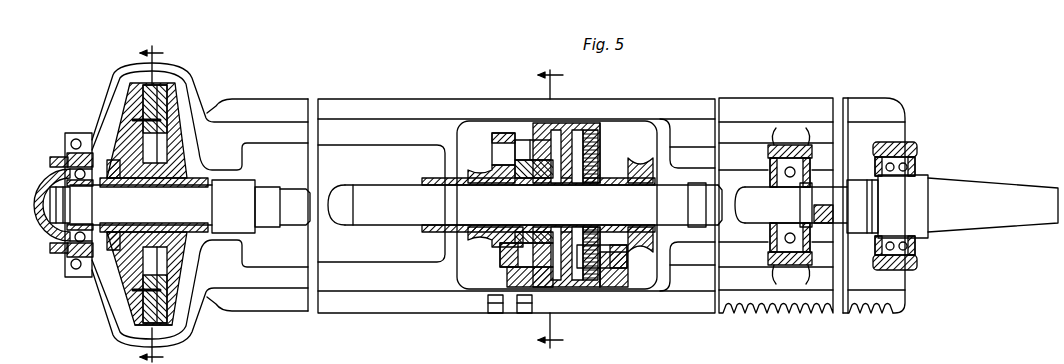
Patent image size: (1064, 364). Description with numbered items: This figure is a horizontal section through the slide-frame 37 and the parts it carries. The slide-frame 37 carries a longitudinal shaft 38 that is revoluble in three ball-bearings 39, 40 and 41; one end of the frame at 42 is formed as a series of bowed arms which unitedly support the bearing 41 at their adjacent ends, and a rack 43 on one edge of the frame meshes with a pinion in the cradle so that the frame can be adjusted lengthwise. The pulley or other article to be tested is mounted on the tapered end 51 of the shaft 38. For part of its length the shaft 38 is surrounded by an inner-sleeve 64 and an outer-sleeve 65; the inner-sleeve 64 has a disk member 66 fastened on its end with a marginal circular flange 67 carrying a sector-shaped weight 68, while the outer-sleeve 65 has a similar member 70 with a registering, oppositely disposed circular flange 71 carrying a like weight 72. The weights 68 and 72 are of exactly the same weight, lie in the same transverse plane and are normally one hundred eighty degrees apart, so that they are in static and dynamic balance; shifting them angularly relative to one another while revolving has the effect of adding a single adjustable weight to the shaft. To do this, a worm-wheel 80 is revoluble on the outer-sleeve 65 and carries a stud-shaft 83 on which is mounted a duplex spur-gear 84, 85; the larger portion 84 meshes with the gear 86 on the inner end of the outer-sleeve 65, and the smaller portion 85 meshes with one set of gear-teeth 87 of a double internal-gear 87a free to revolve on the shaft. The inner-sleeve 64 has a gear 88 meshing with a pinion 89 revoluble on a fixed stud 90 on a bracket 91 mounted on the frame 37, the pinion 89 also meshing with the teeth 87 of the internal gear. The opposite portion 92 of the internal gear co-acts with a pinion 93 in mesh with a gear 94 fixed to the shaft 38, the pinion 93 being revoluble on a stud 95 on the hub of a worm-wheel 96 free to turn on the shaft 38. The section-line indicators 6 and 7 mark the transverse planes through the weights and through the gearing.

The section line 6 is at (151, 196).
The section line 7 is at (550, 209).
The slide-frame 37 is at (687, 143).
The longitudinal shaft 38 is at (680, 226).
The ball-bearing 39 is at (921, 160).
The ball-bearing 40 is at (796, 140).
The ball-bearing 41 is at (62, 160).
The bowed arms 42 is at (108, 82).
The rack 43 is at (826, 313).
The tapered end 51 is at (1000, 192).
The inner-sleeve 64 is at (104, 256).
The outer-sleeve 65 is at (196, 240).
The disk member 66 is at (135, 95).
The marginal circular flange 67 is at (155, 82).
The sector-shaped weight 68 is at (168, 92).
The disk member 70 is at (183, 250).
The circular flange 71 is at (158, 86).
The weight 72 is at (166, 324).
The worm-wheel 80 is at (463, 160).
The stud-shaft 83 is at (498, 148).
The duplex spur-gear portion 84 is at (526, 136).
The duplex spur-gear portion 85 is at (568, 126).
The gear 86 is at (530, 181).
The gear-teeth 87 is at (552, 128).
The double internal-gear 87a is at (584, 122).
The gear 88 is at (540, 181).
The pinion 89 is at (539, 290).
The fixed stud 90 is at (500, 256).
The bracket 91 is at (503, 298).
The internal-gear portion 92 is at (602, 140).
The pinion 93 is at (604, 275).
The gear 94 is at (592, 222).
The stud 95 is at (614, 262).
The worm-wheel 96 is at (640, 163).